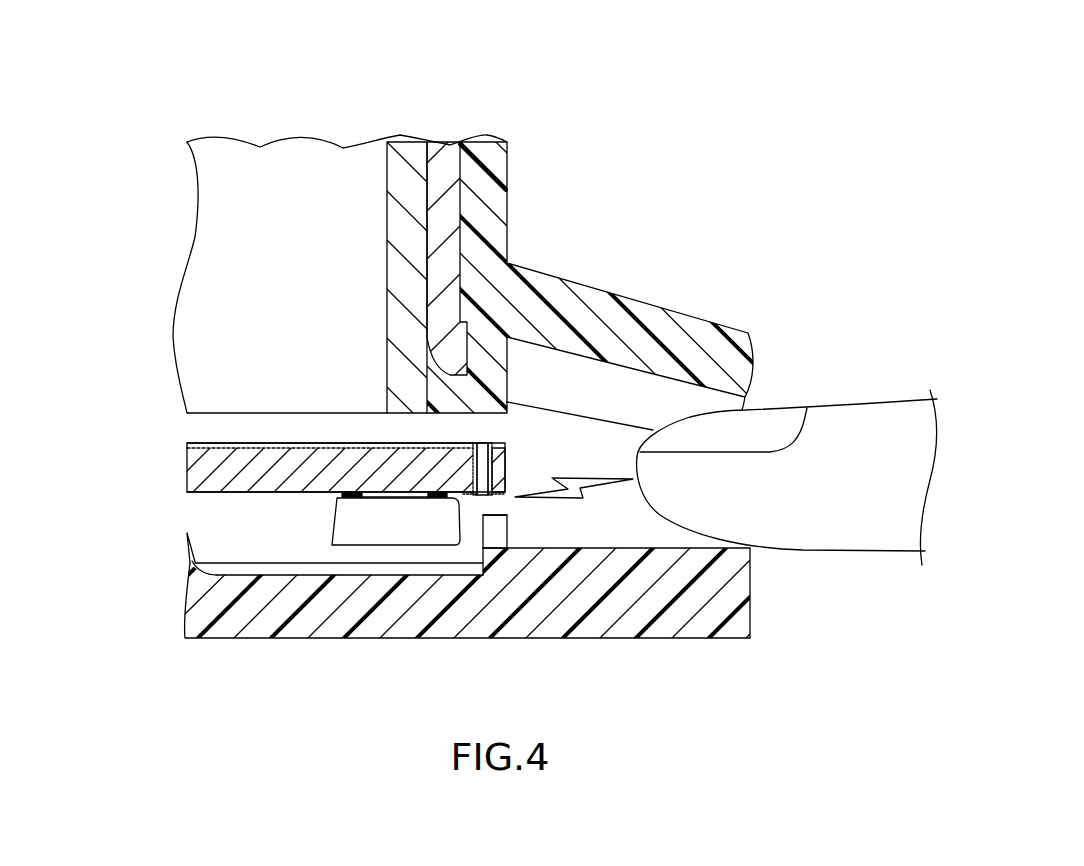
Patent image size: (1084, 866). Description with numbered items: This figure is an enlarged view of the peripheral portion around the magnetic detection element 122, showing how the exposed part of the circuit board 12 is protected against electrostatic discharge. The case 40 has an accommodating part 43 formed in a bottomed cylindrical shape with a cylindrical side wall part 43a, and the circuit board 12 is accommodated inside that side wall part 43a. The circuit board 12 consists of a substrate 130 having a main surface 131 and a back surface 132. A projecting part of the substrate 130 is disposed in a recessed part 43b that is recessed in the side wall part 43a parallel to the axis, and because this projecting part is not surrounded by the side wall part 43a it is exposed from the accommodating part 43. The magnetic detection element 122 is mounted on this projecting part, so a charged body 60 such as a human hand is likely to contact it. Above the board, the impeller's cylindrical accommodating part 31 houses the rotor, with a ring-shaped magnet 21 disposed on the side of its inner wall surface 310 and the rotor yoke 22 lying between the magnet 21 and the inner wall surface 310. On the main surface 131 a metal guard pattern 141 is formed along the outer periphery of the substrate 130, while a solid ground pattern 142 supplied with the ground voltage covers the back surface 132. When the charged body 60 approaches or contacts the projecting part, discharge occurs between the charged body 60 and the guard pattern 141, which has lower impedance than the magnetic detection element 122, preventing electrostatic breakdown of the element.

The circuit board 12 is at (178, 493).
The magnet 21 is at (400, 140).
The rotor yoke 22 is at (432, 140).
The accommodating part 31 is at (503, 163).
The inner wall surface 310 is at (445, 143).
The case 40 is at (702, 630).
The accommodating part 43 is at (493, 520).
The side wall part 43a is at (476, 548).
The recessed part 43b is at (487, 511).
The charged body 60 is at (892, 398).
The magnetic detection element 122 is at (342, 533).
The substrate 130 is at (207, 467).
The main surface 131 is at (213, 492).
The back surface 132 is at (248, 443).
The guard pattern 141 is at (505, 495).
The ground pattern 142 is at (210, 443).